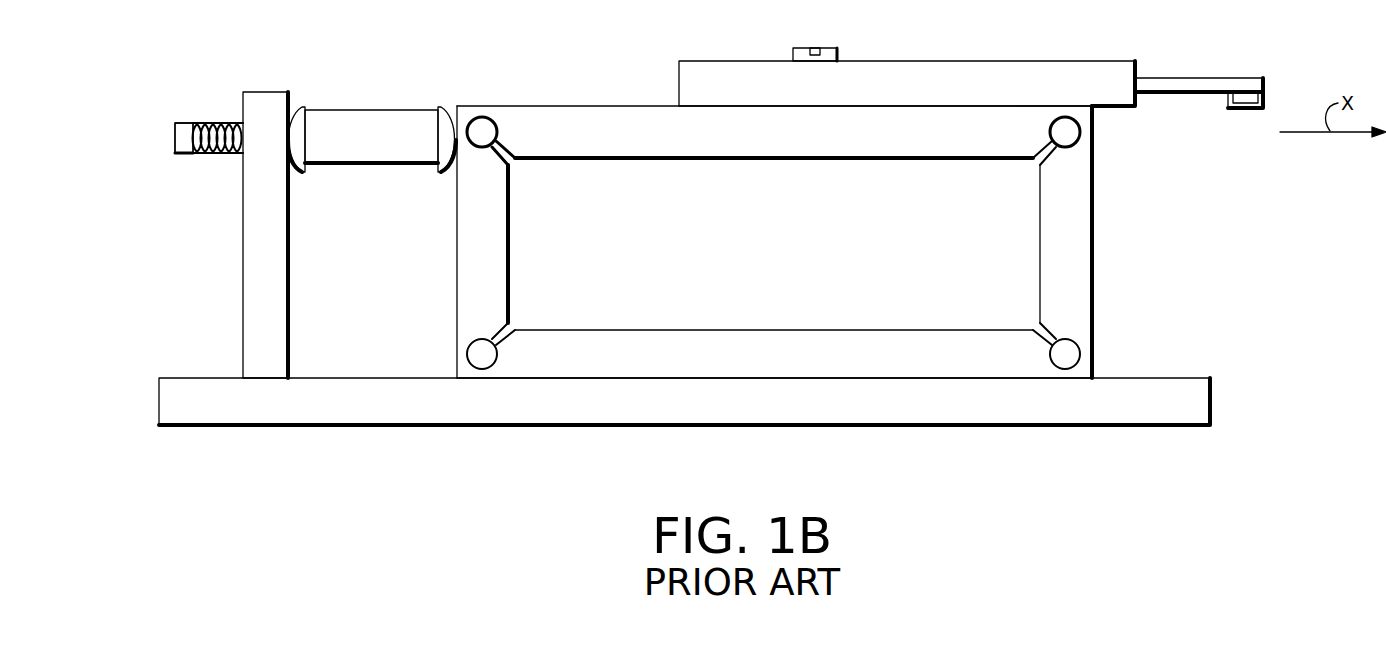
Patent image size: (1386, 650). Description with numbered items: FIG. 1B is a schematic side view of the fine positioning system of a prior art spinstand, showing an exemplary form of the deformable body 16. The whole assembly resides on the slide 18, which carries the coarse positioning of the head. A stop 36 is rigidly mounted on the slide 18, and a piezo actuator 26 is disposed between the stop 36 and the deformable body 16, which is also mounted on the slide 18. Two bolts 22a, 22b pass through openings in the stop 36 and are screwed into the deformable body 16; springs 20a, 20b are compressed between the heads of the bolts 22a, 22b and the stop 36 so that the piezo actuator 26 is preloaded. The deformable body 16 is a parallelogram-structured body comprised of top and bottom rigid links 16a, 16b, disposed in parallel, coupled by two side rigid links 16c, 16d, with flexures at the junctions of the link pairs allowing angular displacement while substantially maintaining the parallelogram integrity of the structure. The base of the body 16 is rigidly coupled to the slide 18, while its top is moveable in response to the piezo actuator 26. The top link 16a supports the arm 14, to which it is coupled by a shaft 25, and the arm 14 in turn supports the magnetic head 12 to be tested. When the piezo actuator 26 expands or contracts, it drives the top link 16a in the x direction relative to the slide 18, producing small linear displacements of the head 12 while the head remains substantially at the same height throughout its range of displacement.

The head 12 is at (1245, 105).
The arm 14 is at (1015, 77).
The deformable body 16 is at (808, 249).
The top rigid link 16a is at (613, 105).
The bottom rigid link 16b is at (633, 358).
The side rigid link 16c is at (462, 251).
The side rigid link 16d is at (1070, 245).
The slide 18 is at (713, 410).
The spring 20a is at (206, 155).
The spring 20b is at (218, 138).
The bolt 22a is at (183, 136).
The bolt 22b is at (184, 138).
The shaft 25 is at (802, 53).
The piezo actuator 26 is at (366, 133).
The stop 36 is at (266, 97).